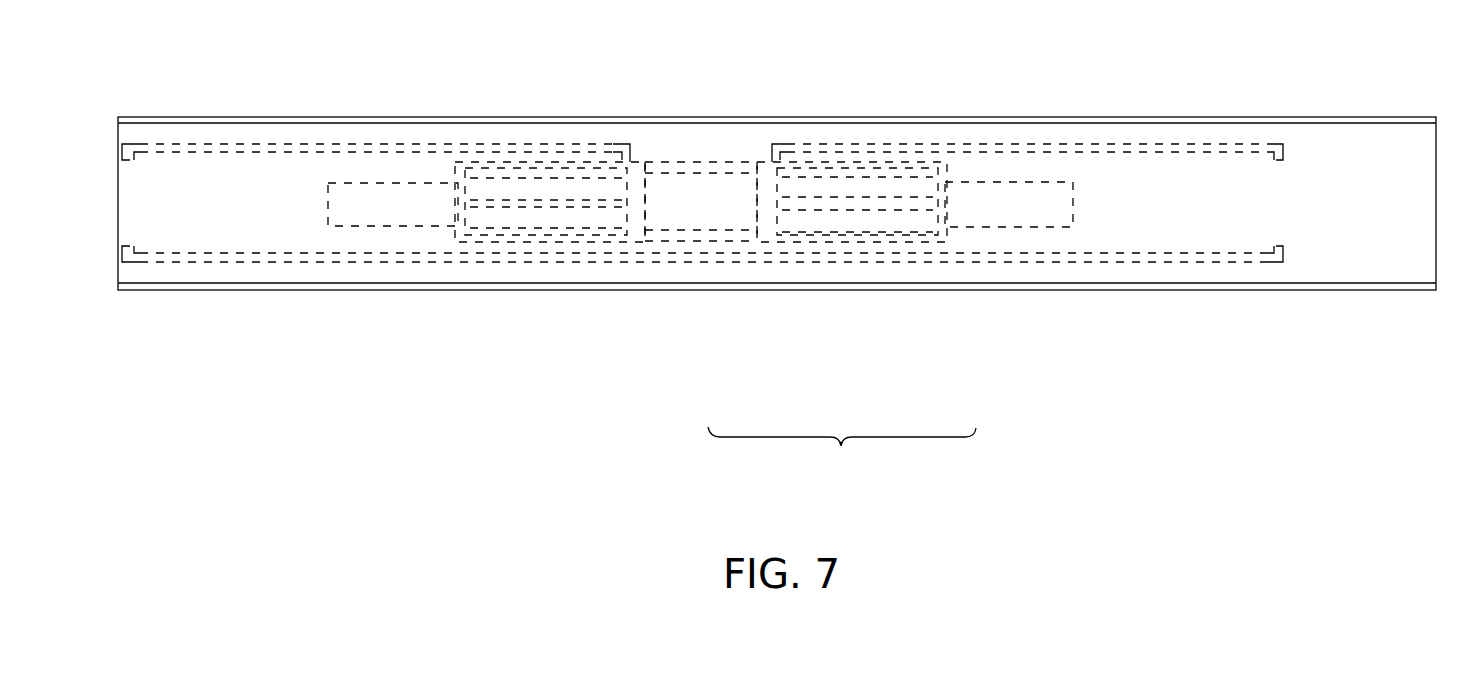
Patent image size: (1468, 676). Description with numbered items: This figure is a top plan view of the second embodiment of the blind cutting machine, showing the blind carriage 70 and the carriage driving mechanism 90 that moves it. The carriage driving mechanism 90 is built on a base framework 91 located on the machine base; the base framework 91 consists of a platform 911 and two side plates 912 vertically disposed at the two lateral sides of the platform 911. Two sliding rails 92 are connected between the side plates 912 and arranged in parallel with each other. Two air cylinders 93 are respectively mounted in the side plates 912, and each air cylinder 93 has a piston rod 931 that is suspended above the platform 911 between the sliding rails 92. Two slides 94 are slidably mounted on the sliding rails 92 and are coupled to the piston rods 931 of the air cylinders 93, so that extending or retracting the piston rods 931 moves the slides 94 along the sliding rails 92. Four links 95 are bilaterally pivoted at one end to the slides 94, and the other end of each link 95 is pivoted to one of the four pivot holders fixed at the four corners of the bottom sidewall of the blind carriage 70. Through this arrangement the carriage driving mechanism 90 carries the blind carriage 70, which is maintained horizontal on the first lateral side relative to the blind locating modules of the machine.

The blind carriage 70 is at (1347, 117).
The carriage driving mechanism 90 is at (1070, 402).
The base framework 91 is at (842, 451).
The platform 911 is at (730, 248).
The side plates 912 is at (453, 242).
The sliding rails 92 is at (702, 162).
The air cylinders 93 is at (390, 228).
The piston rod 931 is at (545, 208).
The slides 94 is at (652, 248).
The links 95 is at (463, 262).